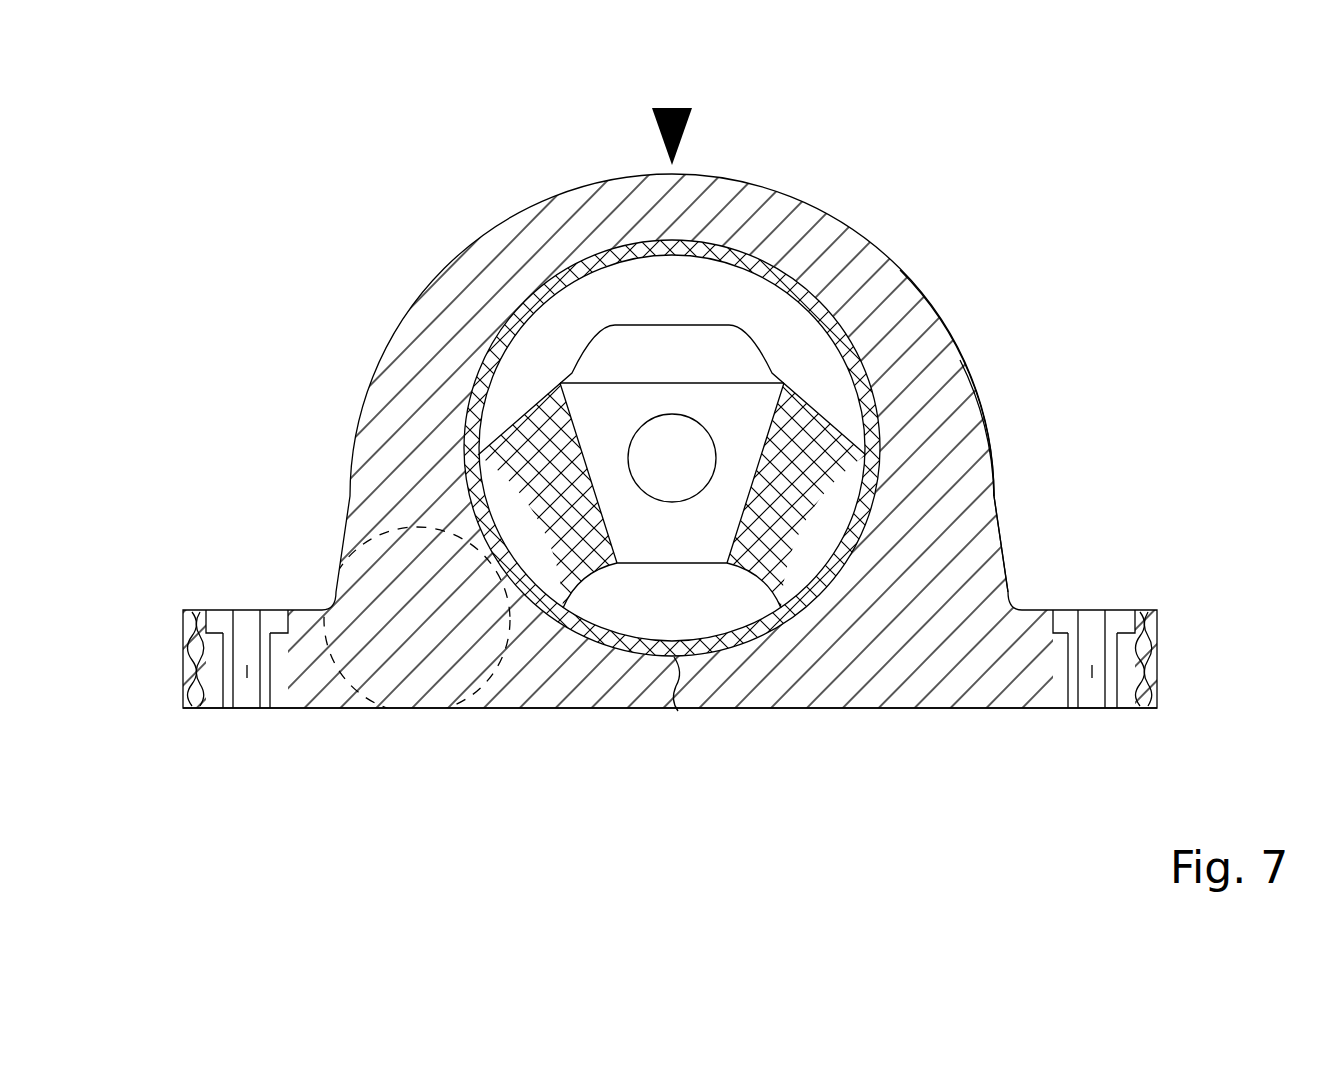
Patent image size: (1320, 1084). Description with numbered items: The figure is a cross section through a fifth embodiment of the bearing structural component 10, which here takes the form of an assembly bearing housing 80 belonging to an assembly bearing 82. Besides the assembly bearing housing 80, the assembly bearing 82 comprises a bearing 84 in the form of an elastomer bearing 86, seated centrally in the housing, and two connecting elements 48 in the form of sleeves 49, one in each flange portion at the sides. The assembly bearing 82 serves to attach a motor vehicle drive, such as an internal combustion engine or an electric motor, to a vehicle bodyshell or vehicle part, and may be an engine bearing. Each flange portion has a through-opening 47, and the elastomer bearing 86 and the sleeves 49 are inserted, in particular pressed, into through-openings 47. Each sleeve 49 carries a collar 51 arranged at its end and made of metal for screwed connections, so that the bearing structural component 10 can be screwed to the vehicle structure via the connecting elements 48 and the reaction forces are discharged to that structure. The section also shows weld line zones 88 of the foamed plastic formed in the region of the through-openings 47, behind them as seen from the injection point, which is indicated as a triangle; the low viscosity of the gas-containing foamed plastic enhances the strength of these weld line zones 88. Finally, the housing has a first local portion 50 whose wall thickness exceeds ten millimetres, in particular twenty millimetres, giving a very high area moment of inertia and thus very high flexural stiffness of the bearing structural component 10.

The bearing structural component 10 is at (912, 242).
The assembly bearing housing 80 is at (989, 321).
The assembly bearing 82 is at (1025, 396).
The elastomer bearing 86 is at (1039, 482).
The bearing 84 is at (568, 331).
The first local portion 50 is at (412, 577).
The collar 51 is at (220, 614).
The through-opening 47 is at (270, 680).
The sleeve 49 is at (240, 640).
The connecting element 48 is at (228, 678).
The weld line zone 88 is at (202, 706).